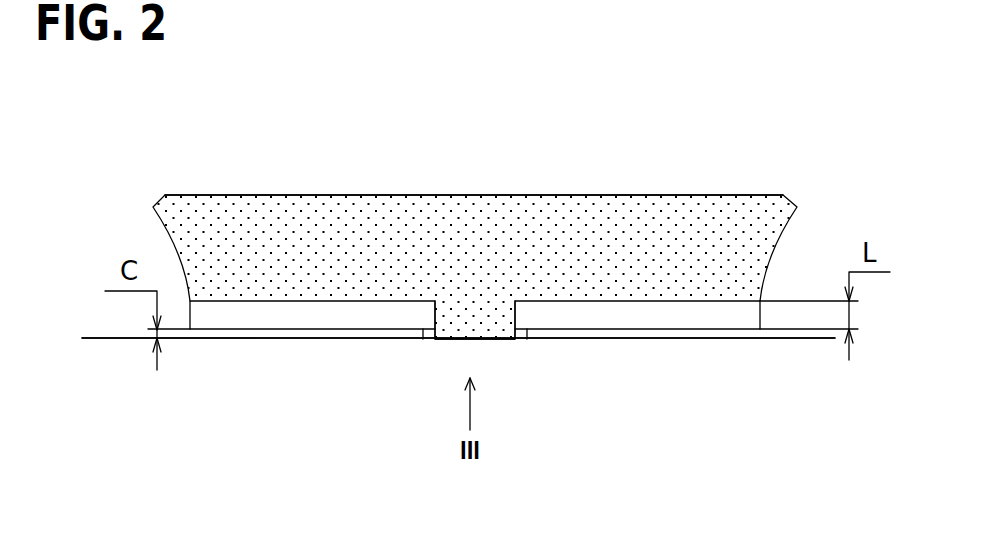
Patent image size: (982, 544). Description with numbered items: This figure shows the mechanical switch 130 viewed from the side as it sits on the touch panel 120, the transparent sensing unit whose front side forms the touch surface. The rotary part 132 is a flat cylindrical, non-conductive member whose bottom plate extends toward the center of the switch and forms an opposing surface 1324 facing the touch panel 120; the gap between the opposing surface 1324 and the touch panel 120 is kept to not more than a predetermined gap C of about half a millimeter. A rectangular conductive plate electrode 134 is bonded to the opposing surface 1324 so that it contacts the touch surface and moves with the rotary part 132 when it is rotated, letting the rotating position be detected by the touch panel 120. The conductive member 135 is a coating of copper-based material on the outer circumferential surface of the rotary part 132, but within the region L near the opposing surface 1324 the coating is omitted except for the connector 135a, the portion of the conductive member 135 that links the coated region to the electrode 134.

The touch panel 120 is at (122, 338).
The mechanical switch 130 is at (215, 183).
The rotary part 132 is at (285, 194).
The electrode 134 is at (430, 335).
The conductive member 135 is at (352, 222).
The connector 135a is at (482, 315).
The opposing surface 1324 is at (710, 330).